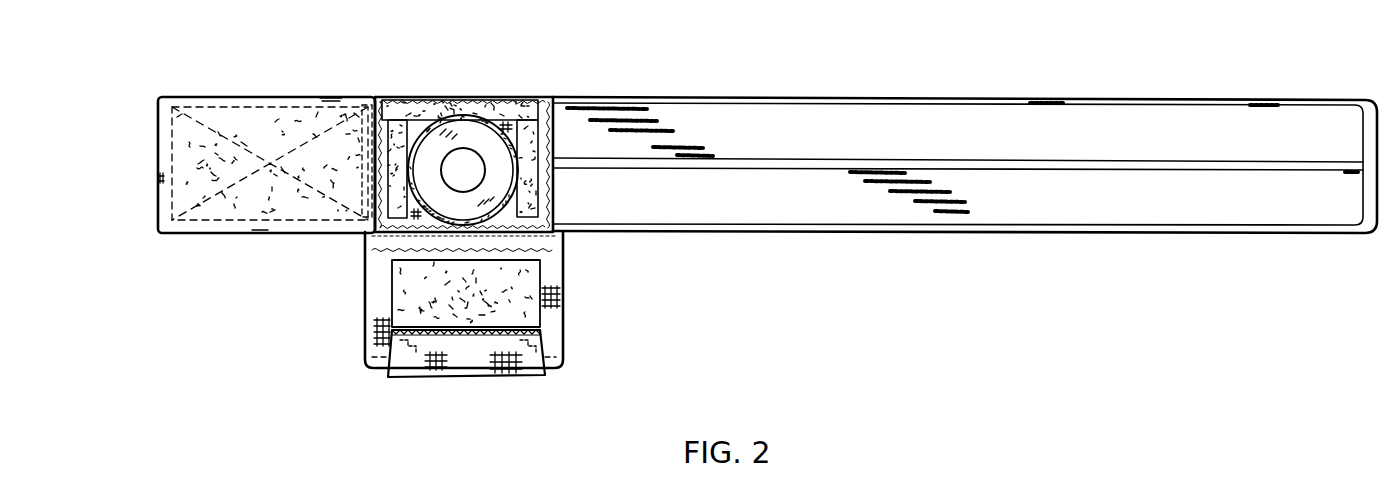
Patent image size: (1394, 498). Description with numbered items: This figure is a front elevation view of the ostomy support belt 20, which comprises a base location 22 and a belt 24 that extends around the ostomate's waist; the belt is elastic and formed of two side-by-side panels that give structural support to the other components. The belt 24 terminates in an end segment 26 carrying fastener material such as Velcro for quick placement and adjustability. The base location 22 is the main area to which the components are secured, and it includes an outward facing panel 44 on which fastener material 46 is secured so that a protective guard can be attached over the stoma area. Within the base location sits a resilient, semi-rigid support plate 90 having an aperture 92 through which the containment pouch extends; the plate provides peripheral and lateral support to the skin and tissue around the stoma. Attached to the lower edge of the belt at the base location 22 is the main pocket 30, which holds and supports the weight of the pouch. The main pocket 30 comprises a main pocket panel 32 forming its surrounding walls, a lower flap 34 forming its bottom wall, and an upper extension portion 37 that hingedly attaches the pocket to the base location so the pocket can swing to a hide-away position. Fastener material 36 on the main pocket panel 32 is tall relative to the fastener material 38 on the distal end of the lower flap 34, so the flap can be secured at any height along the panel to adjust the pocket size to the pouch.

The ostomy support belt 20 is at (332, 297).
The base location 22 is at (876, 143).
The belt 24 is at (801, 142).
The end segment 26 is at (278, 115).
The main pocket 30 is at (466, 329).
The main pocket panel 32 is at (370, 306).
The lower flap 34 is at (483, 360).
The fastener material 36 is at (540, 275).
The upper extension portion 37 is at (372, 238).
The fastener material 38 is at (455, 335).
The outward facing panel 44 is at (422, 112).
The fastener material 46 is at (395, 158).
The support plate 90 is at (462, 140).
The aperture 92 is at (478, 160).